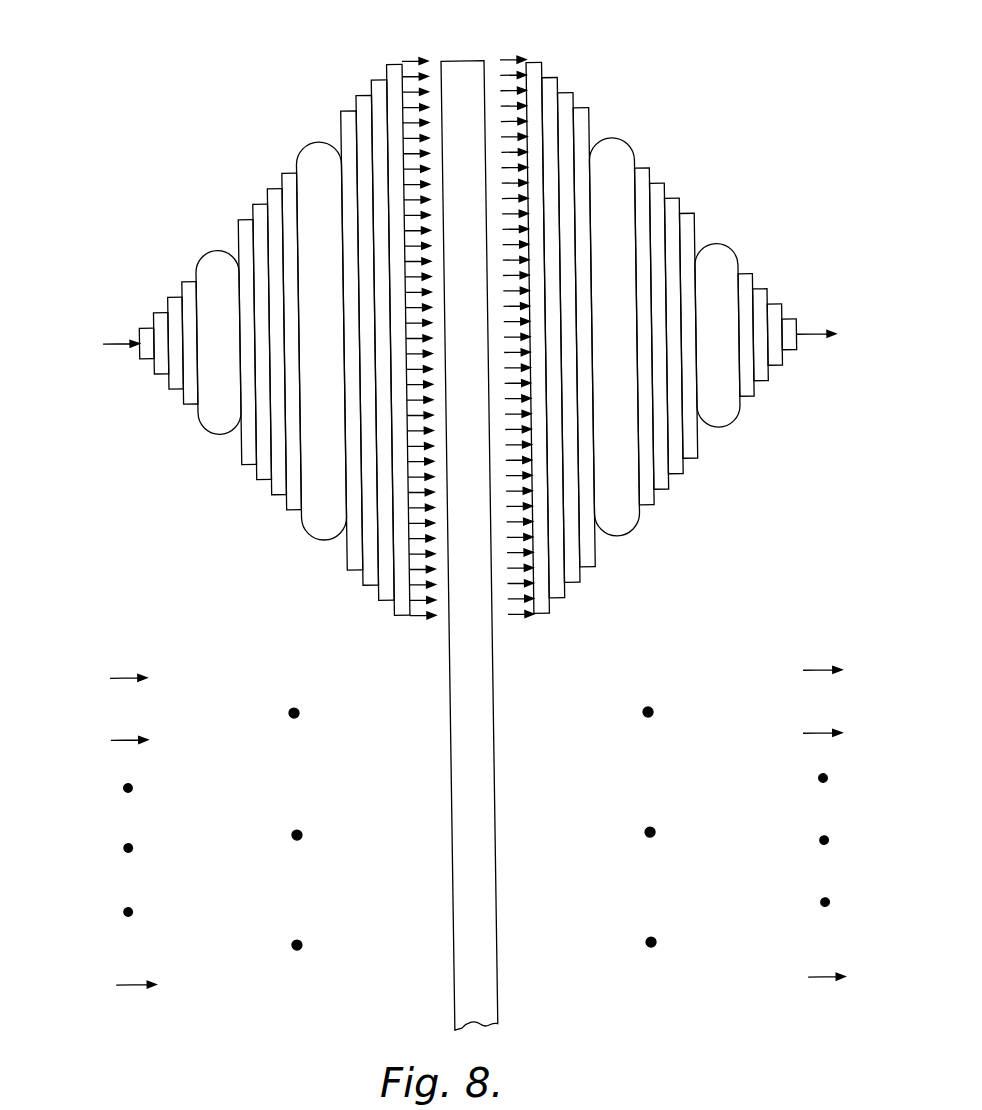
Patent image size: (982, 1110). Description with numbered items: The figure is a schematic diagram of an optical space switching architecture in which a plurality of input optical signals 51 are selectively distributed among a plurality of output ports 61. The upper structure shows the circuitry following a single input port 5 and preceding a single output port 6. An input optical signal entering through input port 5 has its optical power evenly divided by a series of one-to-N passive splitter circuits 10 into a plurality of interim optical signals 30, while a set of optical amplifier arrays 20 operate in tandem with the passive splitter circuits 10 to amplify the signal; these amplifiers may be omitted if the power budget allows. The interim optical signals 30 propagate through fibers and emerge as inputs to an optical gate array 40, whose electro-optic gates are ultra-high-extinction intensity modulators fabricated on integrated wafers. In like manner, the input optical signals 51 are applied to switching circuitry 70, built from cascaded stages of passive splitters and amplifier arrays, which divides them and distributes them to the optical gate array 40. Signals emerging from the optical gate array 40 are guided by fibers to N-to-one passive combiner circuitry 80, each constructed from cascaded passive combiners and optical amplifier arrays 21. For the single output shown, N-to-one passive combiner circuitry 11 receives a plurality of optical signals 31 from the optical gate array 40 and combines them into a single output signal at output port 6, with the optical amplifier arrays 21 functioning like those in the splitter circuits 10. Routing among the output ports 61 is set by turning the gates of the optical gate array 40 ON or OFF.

The input port 5 is at (118, 334).
The output port 6 is at (806, 335).
The 1-to-N passive splitter circuits 10 is at (167, 386).
The N-to-1 passive combiner circuitry 11 is at (767, 386).
The optical amplifier arrays 20 is at (213, 246).
The optical amplifier arrays 21 is at (616, 137).
The interim optical signals 30 is at (413, 60).
The optical signals 31 is at (511, 61).
The optical gate array 40 is at (461, 60).
The input optical signals 51 is at (121, 672).
The output ports 61 is at (815, 673).
The switching circuitry 70 is at (289, 708).
The N-to-1 passive combiner circuitry 80 is at (643, 711).